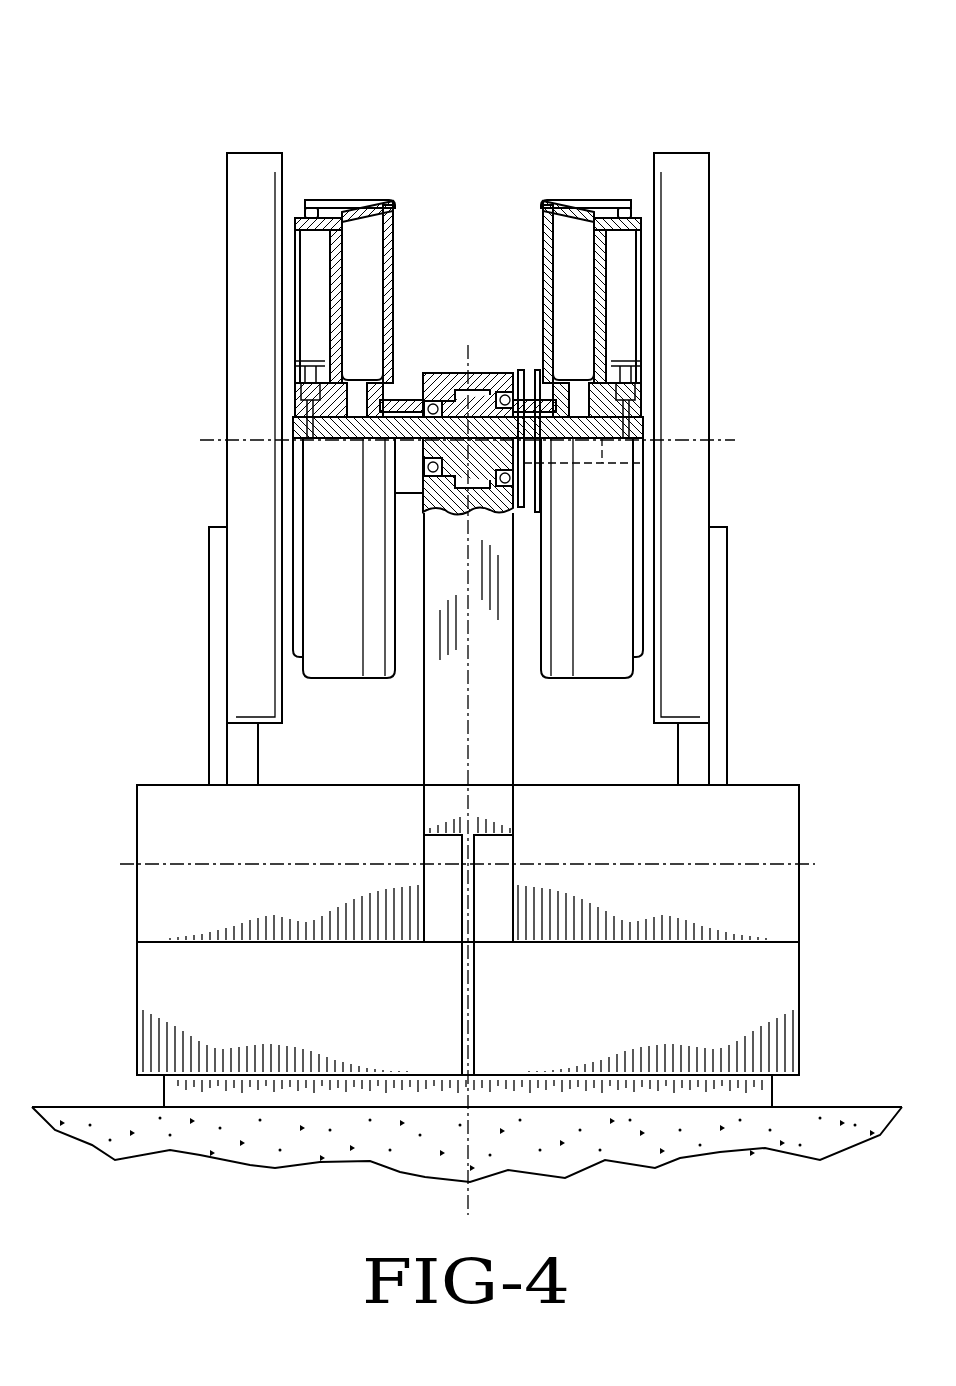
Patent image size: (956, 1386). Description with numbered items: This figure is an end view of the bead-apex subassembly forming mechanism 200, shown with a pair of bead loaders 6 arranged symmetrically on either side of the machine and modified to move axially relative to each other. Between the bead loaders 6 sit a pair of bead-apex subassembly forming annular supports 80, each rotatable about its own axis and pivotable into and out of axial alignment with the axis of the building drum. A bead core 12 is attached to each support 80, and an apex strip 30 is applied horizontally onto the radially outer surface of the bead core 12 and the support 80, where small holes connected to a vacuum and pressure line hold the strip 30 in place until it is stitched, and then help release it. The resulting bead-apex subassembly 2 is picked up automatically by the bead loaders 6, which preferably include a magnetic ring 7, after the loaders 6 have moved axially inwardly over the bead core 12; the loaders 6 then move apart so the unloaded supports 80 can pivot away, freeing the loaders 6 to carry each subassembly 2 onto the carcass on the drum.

The bead-apex subassembly forming mechanism 200 is at (464, 130).
The bead-apex subassembly 2 is at (299, 166).
The apex strip 30 is at (345, 200).
The bead core 12 is at (300, 212).
The bead-apex subassembly forming annular support 80 is at (390, 270).
The bead loader 6 is at (230, 350).
The magnetic ring 7 is at (253, 708).